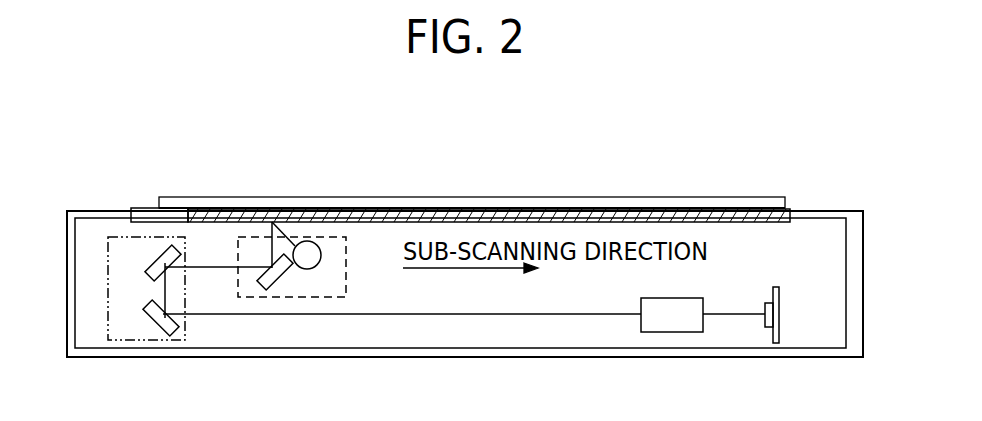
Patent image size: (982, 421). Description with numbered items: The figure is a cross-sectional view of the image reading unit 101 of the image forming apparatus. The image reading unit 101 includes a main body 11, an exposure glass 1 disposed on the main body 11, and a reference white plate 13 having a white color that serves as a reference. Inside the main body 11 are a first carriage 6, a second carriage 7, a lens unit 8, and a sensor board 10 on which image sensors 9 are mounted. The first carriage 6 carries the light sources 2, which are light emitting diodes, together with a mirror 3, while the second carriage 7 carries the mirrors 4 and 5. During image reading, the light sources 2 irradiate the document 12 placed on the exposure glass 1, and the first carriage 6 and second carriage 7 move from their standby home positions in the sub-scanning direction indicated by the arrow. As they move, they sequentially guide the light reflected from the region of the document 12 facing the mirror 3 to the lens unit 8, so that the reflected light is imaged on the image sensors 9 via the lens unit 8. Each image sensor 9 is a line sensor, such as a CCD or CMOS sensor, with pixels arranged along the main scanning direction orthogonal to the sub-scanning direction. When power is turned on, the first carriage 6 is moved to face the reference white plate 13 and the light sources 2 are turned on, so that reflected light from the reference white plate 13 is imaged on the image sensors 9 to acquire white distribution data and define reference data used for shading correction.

The exposure glass 1 is at (336, 208).
The light sources 2 is at (313, 255).
The mirror 3 is at (277, 274).
The mirror 4 is at (152, 268).
The mirror 5 is at (157, 326).
The first carriage 6 is at (347, 288).
The second carriage 7 is at (123, 340).
The lens unit 8 is at (673, 333).
The image sensors 9 is at (765, 320).
The sensor board 10 is at (779, 318).
The main body 11 is at (551, 357).
The document 12 is at (482, 197).
The reference white plate 13 is at (143, 208).
The image reading unit 101 is at (716, 154).